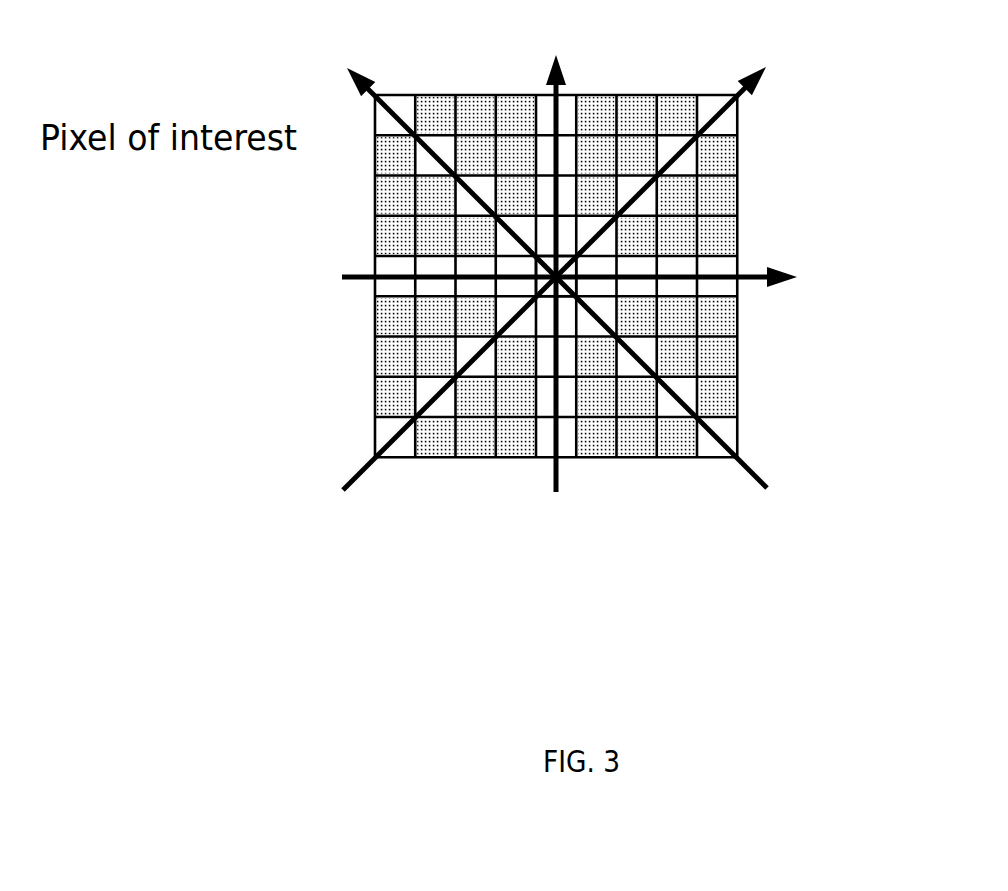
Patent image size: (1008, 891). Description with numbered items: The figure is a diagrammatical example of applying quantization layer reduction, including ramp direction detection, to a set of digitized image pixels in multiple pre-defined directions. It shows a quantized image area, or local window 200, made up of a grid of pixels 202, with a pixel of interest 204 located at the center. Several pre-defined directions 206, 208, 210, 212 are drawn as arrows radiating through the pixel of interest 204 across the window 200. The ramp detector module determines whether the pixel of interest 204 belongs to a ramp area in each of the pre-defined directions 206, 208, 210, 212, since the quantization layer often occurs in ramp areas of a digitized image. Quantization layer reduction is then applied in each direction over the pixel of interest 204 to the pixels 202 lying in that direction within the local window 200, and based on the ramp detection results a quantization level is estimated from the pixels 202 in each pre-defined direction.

The quantized image area (window) 200 is at (441, 585).
The pixels 202 is at (710, 445).
The pixel of interest 204 is at (540, 270).
The pre-defined direction 206 is at (557, 250).
The pre-defined direction 208 is at (558, 252).
The pre-defined direction 210 is at (572, 278).
The pre-defined direction 212 is at (606, 273).